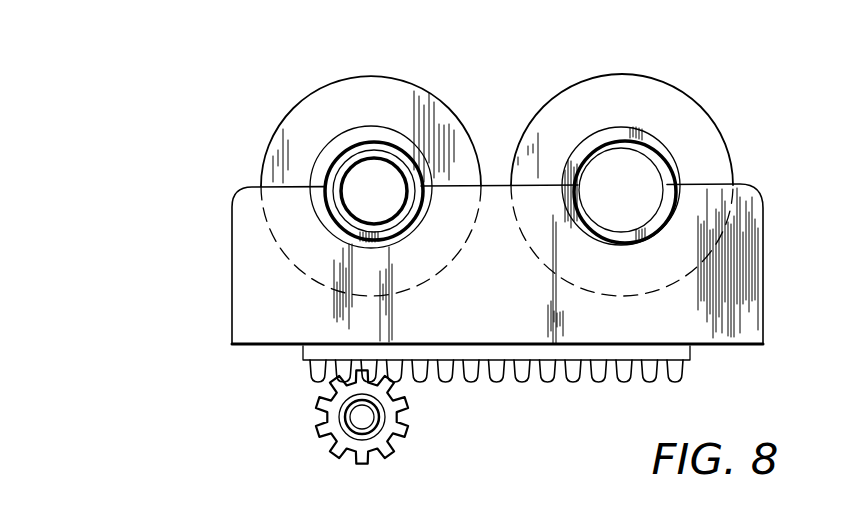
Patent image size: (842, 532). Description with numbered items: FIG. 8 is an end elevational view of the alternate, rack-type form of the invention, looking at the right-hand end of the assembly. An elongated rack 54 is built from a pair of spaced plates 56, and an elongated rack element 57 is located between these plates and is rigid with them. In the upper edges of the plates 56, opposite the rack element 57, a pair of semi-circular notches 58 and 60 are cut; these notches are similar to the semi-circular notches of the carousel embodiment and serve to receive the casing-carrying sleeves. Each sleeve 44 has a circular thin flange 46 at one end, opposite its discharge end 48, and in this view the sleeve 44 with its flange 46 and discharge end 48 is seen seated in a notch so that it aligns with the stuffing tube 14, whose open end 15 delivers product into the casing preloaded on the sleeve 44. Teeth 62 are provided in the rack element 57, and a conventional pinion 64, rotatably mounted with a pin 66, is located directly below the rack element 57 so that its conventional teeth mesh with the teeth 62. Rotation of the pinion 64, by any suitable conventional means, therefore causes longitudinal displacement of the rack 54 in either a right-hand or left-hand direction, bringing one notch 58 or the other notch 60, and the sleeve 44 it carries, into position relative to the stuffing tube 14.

The stuffing tube 14 is at (336, 212).
The open end 15 is at (352, 225).
The sleeve 44 is at (358, 118).
The circular thin flange 46 is at (330, 110).
The discharge end 48 is at (392, 138).
The elongated rack 54 is at (230, 180).
The spaced plates 56 is at (273, 207).
The rack element 57 is at (318, 352).
The semi-circular notch 58 is at (380, 240).
The semi-circular notch 60 is at (650, 212).
The teeth 62 is at (655, 374).
The pinion 64 is at (325, 407).
The pin 66 is at (357, 417).